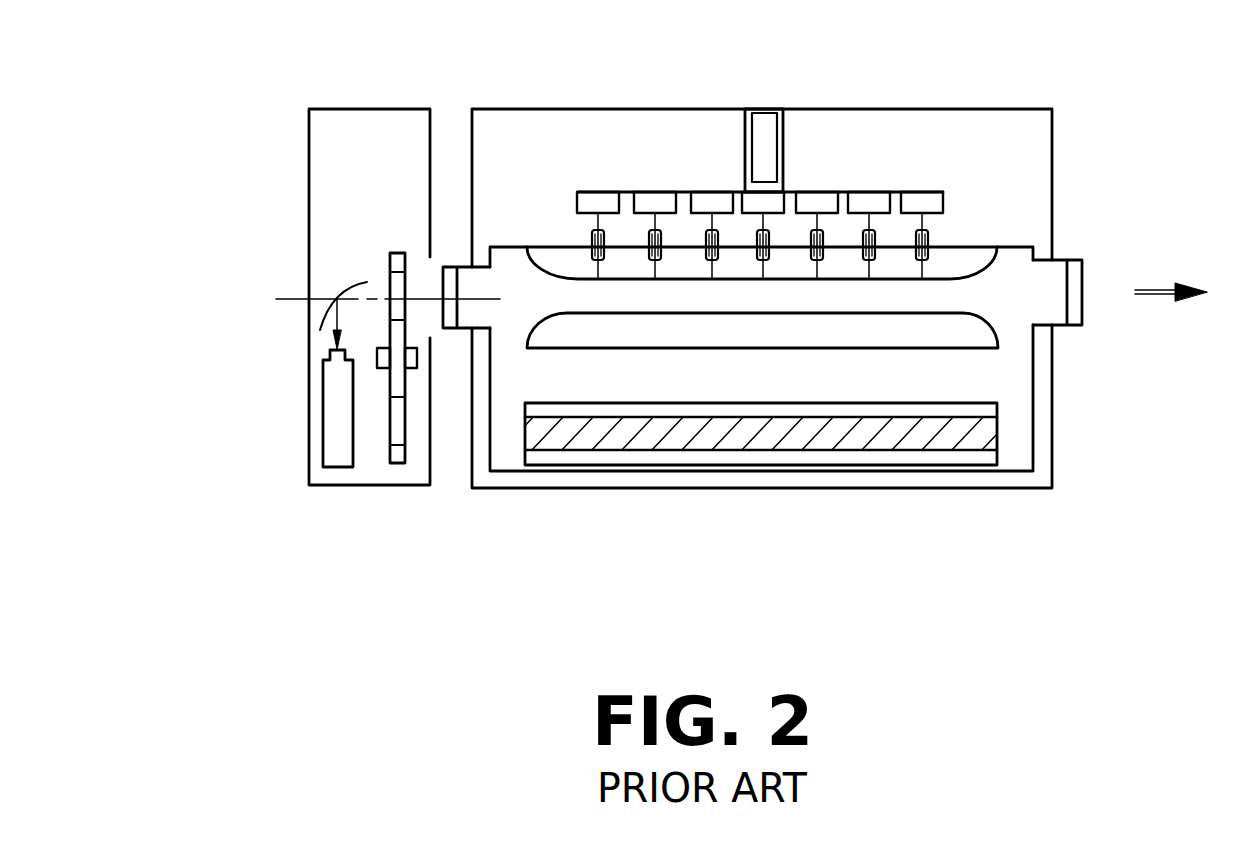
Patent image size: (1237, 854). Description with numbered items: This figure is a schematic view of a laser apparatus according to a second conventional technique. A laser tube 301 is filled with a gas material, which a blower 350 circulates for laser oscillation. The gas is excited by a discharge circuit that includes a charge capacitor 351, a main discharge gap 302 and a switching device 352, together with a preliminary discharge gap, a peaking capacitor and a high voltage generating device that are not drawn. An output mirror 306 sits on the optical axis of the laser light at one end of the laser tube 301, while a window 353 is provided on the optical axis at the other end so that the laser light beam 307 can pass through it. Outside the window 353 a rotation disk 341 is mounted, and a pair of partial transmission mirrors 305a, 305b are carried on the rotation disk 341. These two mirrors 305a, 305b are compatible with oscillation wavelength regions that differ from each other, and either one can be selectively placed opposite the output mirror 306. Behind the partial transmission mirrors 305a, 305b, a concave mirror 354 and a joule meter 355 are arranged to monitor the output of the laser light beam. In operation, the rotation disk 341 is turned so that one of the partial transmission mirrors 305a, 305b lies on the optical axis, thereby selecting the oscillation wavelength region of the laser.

The laser tube 301 is at (1033, 356).
The main discharge gap 302 is at (945, 316).
The partial transmission mirror 305a is at (390, 432).
The partial transmission mirror 305b is at (388, 285).
The output mirror 306 is at (1083, 262).
The laser light beam 307 is at (1158, 287).
The rotation disk 341 is at (397, 465).
The blower 350 is at (998, 432).
The charge capacitor 351 is at (932, 190).
The switching device 352 is at (767, 108).
The window 353 is at (441, 337).
The concave mirror 354 is at (350, 288).
The joule meter 355 is at (323, 442).